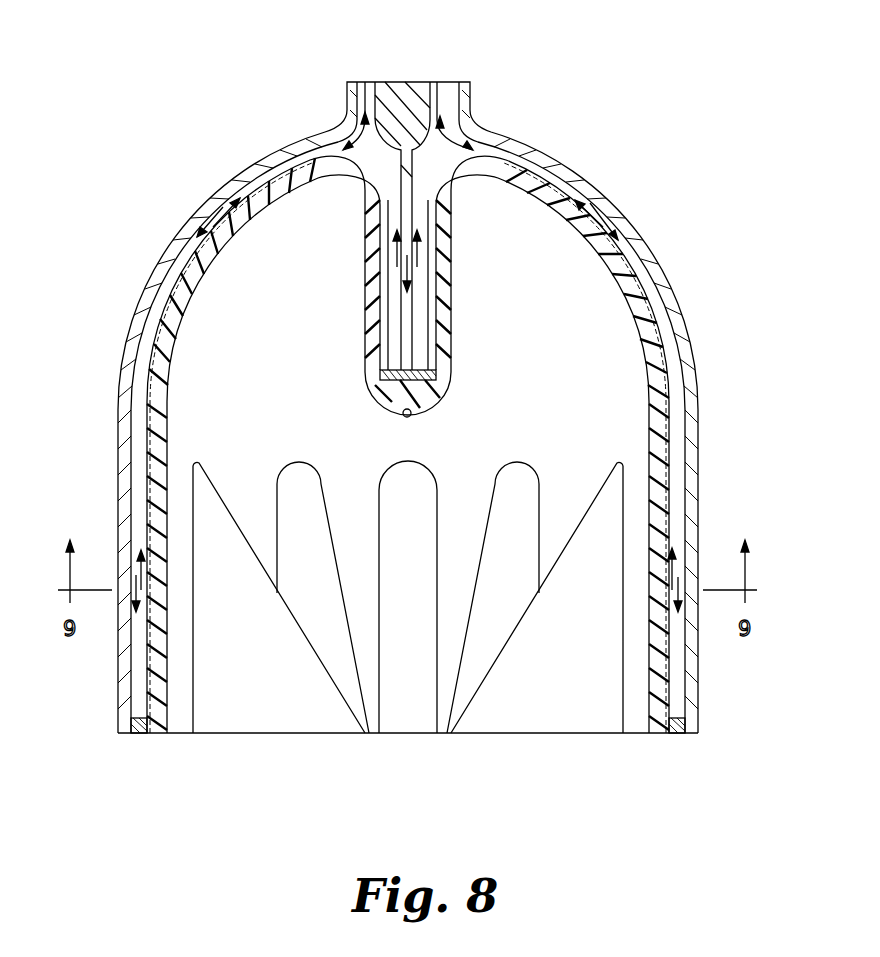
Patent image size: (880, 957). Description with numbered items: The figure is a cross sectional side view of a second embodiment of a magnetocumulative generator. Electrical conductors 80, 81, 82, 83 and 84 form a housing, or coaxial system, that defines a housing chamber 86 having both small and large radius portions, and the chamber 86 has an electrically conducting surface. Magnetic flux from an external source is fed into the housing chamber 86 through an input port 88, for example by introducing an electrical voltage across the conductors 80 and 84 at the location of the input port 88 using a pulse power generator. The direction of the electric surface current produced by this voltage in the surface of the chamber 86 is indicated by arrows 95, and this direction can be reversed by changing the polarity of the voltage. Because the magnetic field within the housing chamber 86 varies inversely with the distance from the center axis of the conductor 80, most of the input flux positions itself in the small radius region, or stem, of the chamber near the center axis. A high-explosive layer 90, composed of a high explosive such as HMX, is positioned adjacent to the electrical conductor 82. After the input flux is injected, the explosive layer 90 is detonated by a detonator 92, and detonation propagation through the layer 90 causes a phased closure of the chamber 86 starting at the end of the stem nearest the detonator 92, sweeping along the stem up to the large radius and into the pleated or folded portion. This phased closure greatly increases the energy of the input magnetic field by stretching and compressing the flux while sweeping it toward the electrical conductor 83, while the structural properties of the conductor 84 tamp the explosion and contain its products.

The electrical conductor 80 is at (410, 82).
The electrical conductor 81 is at (415, 382).
The electrical conductor 82 is at (545, 183).
The electrical conductor 83 is at (676, 734).
The electrical conductor 84 is at (683, 303).
The housing chamber 86 is at (688, 421).
The input port 88 is at (365, 82).
The high-explosive layer 90 is at (450, 332).
The detonator 92 is at (404, 416).
The arrows 95 is at (625, 216).